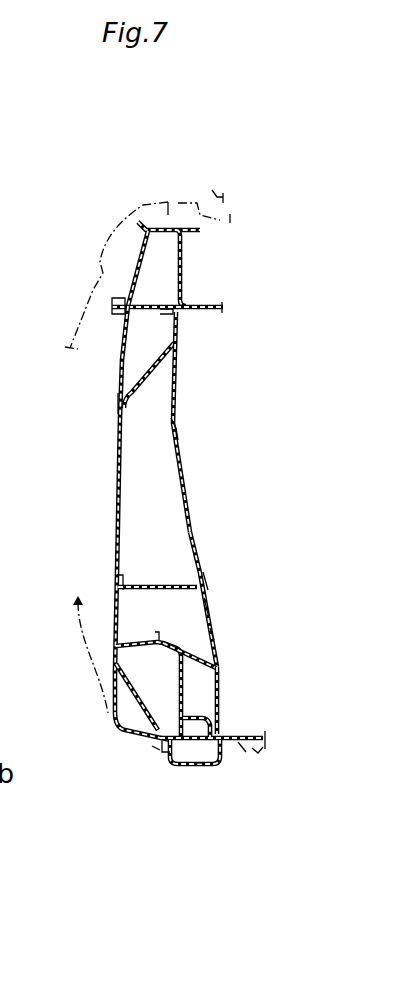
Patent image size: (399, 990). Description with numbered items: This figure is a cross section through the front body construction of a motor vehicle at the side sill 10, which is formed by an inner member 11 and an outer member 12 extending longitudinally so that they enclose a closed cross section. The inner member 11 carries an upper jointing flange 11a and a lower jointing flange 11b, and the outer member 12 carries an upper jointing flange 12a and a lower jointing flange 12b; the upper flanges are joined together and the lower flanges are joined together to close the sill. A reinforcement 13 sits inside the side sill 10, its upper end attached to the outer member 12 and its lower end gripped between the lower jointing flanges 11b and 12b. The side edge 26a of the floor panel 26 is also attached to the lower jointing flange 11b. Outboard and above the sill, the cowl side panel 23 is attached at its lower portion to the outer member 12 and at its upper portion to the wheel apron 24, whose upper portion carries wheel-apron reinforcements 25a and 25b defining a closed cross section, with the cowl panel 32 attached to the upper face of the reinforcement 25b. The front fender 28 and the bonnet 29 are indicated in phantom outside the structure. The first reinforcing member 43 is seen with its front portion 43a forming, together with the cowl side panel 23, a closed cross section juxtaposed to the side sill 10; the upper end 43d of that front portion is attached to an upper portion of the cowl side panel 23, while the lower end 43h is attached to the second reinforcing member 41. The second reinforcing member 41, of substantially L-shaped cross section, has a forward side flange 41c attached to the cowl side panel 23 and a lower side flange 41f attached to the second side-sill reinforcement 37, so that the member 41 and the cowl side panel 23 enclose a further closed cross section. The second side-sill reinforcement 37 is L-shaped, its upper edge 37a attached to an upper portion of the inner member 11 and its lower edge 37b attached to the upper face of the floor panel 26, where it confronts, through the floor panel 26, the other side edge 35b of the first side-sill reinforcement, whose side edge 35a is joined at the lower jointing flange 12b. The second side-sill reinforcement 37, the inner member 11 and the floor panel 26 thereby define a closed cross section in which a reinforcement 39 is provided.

The side sill 10 is at (113, 702).
The inner member 11 is at (183, 684).
The upper jointing flange 11a is at (208, 614).
The lower jointing flange 11b is at (182, 767).
The outer member 12 is at (114, 725).
The upper jointing flange 12a is at (155, 640).
The lower jointing flange 12b is at (167, 768).
The reinforcement 13 is at (130, 740).
The cowl side panel 23 is at (115, 512).
The wheel apron 24 is at (213, 315).
The wheel-apron reinforcement 25a is at (140, 272).
The wheel-apron reinforcement 25b is at (183, 258).
The floor panel 26 is at (259, 753).
The side edge 26a is at (200, 764).
The front fender 28 is at (92, 302).
The bonnet 29 is at (212, 190).
The cowl panel 32 is at (200, 230).
The side edge 35a is at (157, 750).
The other side edge 35b is at (243, 753).
The second side-sill reinforcement 37 is at (217, 700).
The upper edge 37a is at (213, 633).
The lower edge 37b is at (222, 735).
The reinforcement 39 is at (217, 750).
The second reinforcing member 41 is at (208, 597).
The forward side flange 41c is at (120, 573).
The lower side flange 41f is at (221, 664).
The first reinforcing member 43 is at (181, 474).
The front portion 43a is at (178, 440).
The upper end 43d is at (180, 340).
The lower end 43h is at (215, 582).